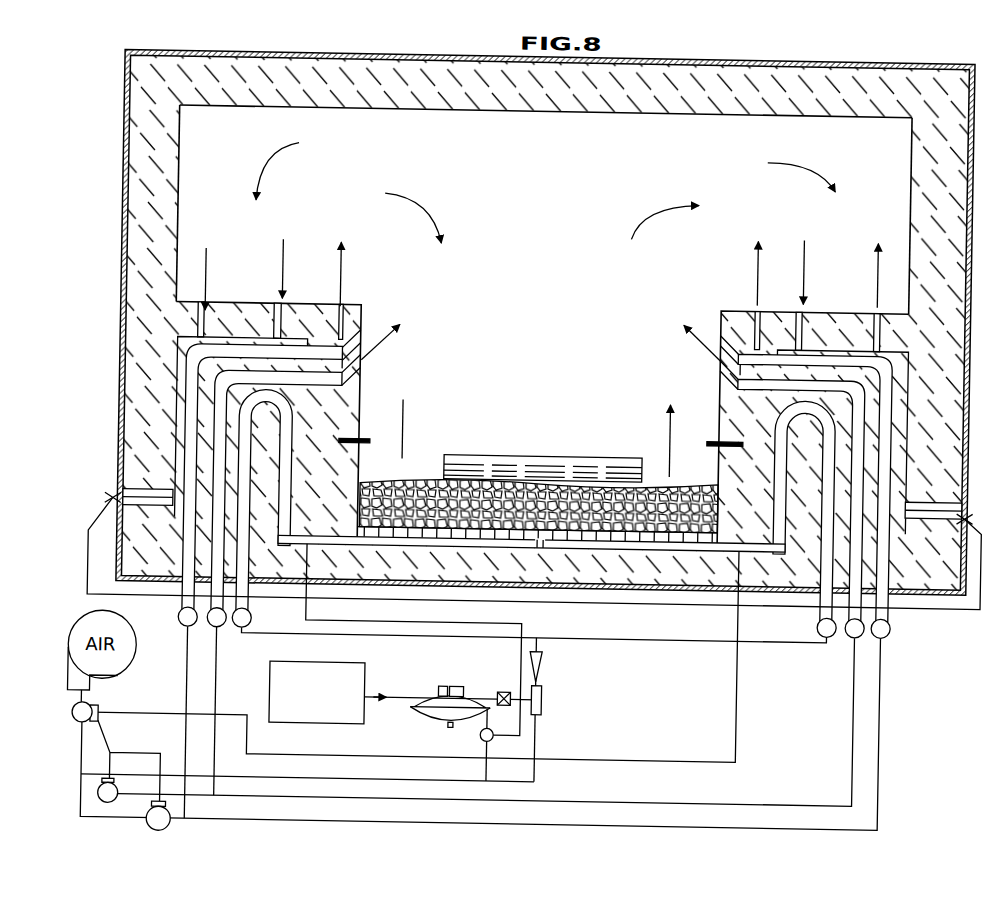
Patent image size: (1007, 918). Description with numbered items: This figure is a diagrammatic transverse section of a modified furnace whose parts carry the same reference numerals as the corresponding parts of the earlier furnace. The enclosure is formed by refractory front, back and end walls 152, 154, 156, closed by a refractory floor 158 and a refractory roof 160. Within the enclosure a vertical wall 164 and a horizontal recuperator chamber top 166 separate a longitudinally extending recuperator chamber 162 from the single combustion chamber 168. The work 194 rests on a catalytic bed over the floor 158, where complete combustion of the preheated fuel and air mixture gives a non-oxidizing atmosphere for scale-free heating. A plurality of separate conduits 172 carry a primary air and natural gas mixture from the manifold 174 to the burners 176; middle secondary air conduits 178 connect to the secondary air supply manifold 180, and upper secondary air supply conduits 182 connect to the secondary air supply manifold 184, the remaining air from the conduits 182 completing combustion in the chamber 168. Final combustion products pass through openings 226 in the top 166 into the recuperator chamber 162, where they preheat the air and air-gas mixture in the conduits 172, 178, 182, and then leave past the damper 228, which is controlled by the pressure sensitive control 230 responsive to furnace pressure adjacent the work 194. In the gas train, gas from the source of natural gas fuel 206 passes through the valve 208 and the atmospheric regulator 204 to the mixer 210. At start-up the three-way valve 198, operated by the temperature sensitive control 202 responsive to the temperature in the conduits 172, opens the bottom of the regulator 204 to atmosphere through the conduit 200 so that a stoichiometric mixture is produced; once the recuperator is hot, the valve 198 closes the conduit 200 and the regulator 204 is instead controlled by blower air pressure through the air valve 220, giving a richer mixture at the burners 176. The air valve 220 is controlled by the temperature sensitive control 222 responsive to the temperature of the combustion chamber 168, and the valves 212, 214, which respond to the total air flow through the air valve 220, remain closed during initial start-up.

The front wall 152 is at (914, 147).
The back wall 154 is at (177, 139).
The end wall 156 is at (518, 141).
The refractory floor 158 is at (563, 580).
The refractory roof 160 is at (745, 58).
The recuperator chamber 162 is at (177, 346).
The vertical wall 164 is at (363, 373).
The recuperator chamber top 166 is at (227, 305).
The combustion chamber 168 is at (553, 283).
The conduits 172 is at (295, 474).
The manifold 174 is at (255, 625).
The burners 176 is at (645, 543).
The middle secondary air conduits 178 is at (173, 388).
The secondary air supply manifold 180 is at (226, 632).
The upper secondary air supply conduits 182 is at (181, 435).
The secondary air supply manifold 184 is at (185, 622).
The work 194 is at (532, 456).
The three-way valve 198 is at (508, 741).
The conduit 200 is at (477, 742).
The temperature sensitive control 202 is at (317, 604).
The atmospheric regulator 204 is at (447, 725).
The source of natural gas fuel 206 is at (297, 728).
The valve 208 is at (506, 692).
The mixer 210 is at (549, 668).
The valve 212 is at (108, 800).
The valve 214 is at (179, 820).
The air valve 220 is at (79, 721).
The temperature sensitive control 222 is at (720, 439).
The openings 226 is at (287, 304).
The damper 228 is at (116, 505).
The pressure sensitive control 230 is at (361, 440).